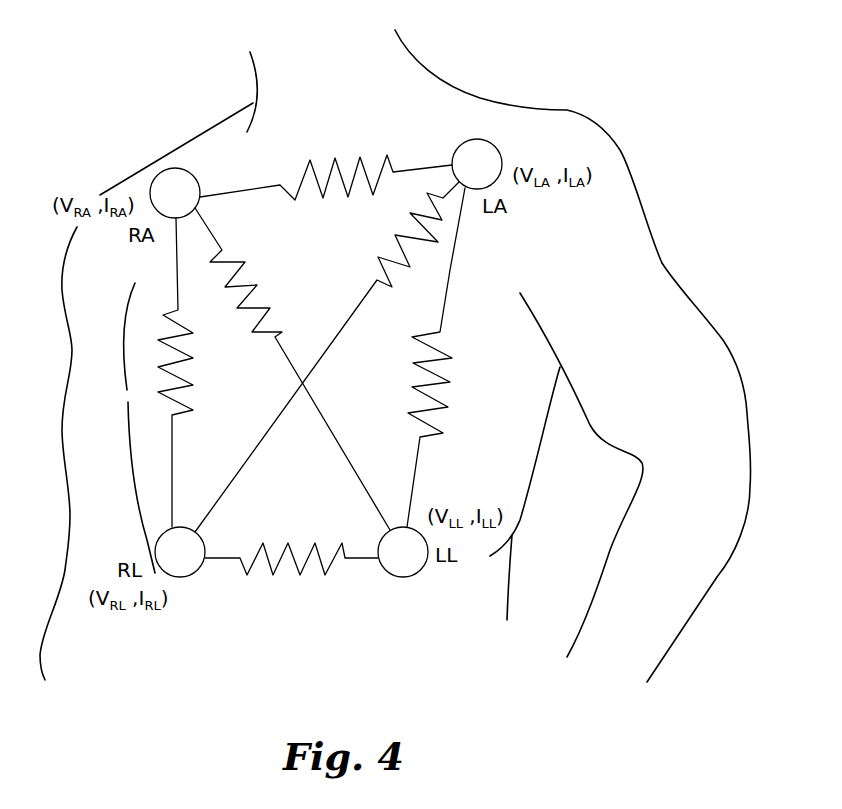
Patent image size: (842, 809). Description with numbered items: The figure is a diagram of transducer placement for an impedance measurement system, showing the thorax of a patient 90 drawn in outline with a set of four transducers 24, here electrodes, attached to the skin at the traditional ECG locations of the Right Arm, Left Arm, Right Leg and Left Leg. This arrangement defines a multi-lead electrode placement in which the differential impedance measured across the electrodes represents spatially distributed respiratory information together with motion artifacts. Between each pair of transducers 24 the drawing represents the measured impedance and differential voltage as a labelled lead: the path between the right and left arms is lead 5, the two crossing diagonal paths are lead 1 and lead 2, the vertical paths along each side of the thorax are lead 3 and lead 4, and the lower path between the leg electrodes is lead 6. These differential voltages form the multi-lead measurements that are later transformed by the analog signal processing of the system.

The transducers 24 is at (157, 176).
The patient 90 is at (681, 288).
The impedance path ΔZ1/ΔV1 (RA–LL) 1 is at (292, 369).
The impedance path ΔZ2/ΔV2 (LA–RL) 2 is at (327, 357).
The impedance path ΔZ3/ΔV3 (RA–RL) 3 is at (201, 372).
The impedance path ΔZ4/ΔV4 (LA–LL) 4 is at (451, 357).
The impedance path ΔZ5/ΔV5 (RA–LA) 5 is at (326, 165).
The impedance path ΔZ6/ΔV6 (RL–LL) 6 is at (291, 577).